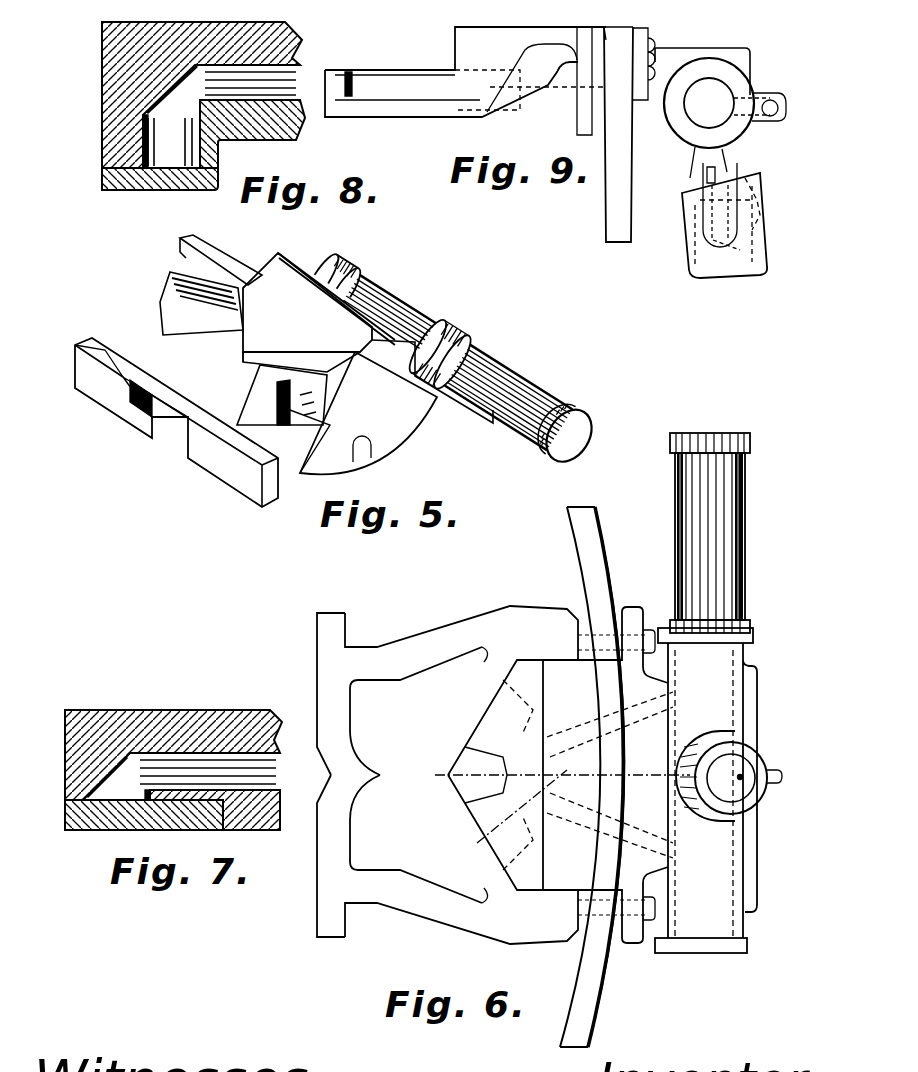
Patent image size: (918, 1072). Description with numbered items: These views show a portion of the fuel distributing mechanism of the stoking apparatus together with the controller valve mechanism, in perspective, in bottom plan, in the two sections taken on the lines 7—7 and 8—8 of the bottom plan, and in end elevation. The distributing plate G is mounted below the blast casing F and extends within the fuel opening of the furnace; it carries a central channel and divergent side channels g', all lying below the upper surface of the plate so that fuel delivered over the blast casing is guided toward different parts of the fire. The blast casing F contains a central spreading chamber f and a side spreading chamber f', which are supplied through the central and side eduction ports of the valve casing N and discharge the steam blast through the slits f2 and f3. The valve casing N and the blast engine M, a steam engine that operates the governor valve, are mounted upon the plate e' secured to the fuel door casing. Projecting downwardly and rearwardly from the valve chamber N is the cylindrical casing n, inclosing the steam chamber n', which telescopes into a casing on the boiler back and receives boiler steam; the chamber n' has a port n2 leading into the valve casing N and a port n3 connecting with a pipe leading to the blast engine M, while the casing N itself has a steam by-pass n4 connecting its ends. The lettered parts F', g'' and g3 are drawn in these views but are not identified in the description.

In FIG. 8, the central spreading chamber f is at (167, 164).
In FIG. 7, the side spreading chamber f' is at (144, 821).
In FIG. 8, the slit f2 is at (104, 162).
In FIG. 5, the slit f2 is at (233, 384).
In FIG. 7, the slit f3 is at (105, 800).
In FIG. 5, the slit f3 is at (282, 395).
In FIG. 5, the blast casing F is at (368, 338).
In FIG. 6, the blast casing F is at (560, 775).
In FIG. 9, the plate arm F' is at (618, 23).
In FIG. 9, the distributing plate G is at (383, 80).
In FIG. 5, the distributing plate G is at (176, 422).
In FIG. 6, the distributing plate G is at (492, 775).
In FIG. 5, the divergent side channel g' is at (180, 285).
In FIG. 5, the guide rib g'' is at (308, 448).
In FIG. 5, the guide recess g3 is at (175, 395).
In FIG. 9, the valve casing N is at (738, 54).
In FIG. 5, the valve casing N is at (397, 303).
In FIG. 6, the valve casing N is at (733, 712).
In FIG. 9, the blast engine M is at (709, 103).
In FIG. 5, the blast engine M is at (565, 433).
In FIG. 6, the blast engine M is at (743, 528).
In FIG. 9, the plate e' is at (629, 134).
In FIG. 5, the plate e' is at (368, 413).
In FIG. 6, the plate e' is at (597, 777).
In FIG. 9, the cylindrical casing n is at (709, 212).
In FIG. 6, the cylindrical casing n is at (730, 776).
In FIG. 9, the steam chamber n' is at (726, 271).
In FIG. 6, the steam chamber n' is at (761, 813).
In FIG. 9, the port n2 is at (713, 213).
In FIG. 9, the port n3 is at (757, 200).
In FIG. 6, the port n3 is at (750, 780).
In FIG. 9, the steam by-pass n4 is at (783, 100).
In FIG. 6, the section line 7— 7 is at (521, 815).
In FIG. 6, the section line 8— 8 is at (552, 776).